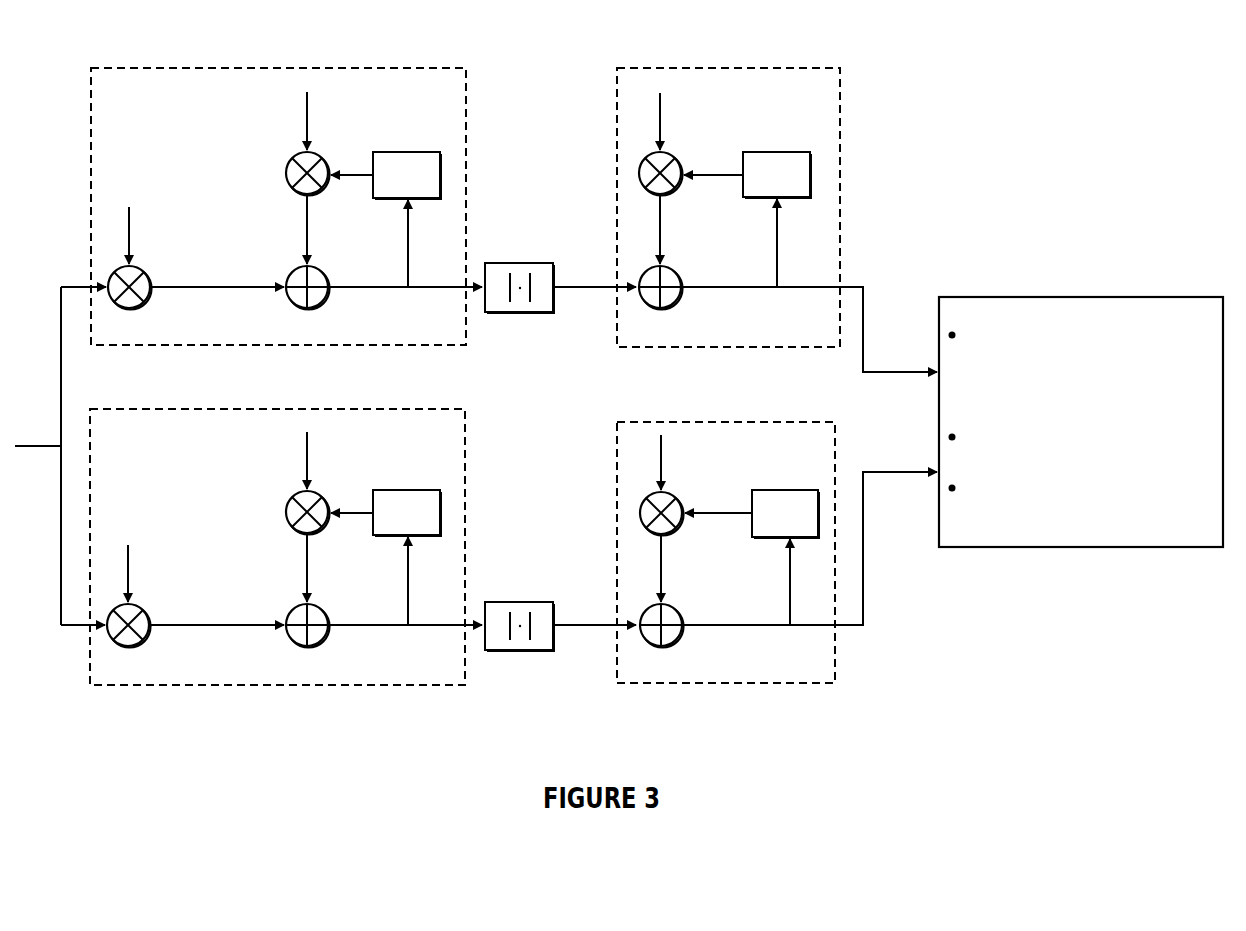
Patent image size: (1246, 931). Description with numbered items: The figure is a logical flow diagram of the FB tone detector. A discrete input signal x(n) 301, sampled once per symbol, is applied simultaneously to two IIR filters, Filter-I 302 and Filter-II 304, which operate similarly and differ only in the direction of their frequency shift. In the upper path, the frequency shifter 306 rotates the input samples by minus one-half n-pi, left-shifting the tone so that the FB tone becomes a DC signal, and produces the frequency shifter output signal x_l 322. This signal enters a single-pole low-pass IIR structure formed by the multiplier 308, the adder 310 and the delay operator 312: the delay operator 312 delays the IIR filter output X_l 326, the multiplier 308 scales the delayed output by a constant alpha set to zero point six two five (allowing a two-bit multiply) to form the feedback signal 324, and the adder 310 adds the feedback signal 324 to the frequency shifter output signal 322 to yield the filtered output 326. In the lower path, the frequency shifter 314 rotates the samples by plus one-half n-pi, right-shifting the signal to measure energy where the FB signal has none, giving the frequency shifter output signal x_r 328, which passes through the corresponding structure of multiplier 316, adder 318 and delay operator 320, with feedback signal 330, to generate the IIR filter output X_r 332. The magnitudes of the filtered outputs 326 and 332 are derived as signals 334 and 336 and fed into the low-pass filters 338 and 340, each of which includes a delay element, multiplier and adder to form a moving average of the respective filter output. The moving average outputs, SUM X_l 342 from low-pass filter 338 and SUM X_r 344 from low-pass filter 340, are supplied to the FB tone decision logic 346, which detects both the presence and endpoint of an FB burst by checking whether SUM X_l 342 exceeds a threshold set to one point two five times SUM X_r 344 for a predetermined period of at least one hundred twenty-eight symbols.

The input discrete signal x(n) 301 is at (48, 446).
The Filter-I 302 is at (119, 68).
The Filter-II 304 is at (460, 409).
The frequency shifter 306 is at (143, 278).
The multiplier 308 is at (290, 160).
The adder 310 is at (289, 302).
The delay operator 312 is at (401, 152).
The frequency shifter 314 is at (116, 640).
The multiplier 316 is at (285, 516).
The adder 318 is at (290, 641).
The delay operator 320 is at (415, 490).
The frequency shifter output signal x_l 322 is at (207, 289).
The feedback signal 324 is at (305, 221).
The IIR filter output X_l 326 is at (388, 289).
The frequency shifter output signal x_r 328 is at (200, 625).
The feedback signal 330 is at (302, 564).
The IIR filter output X_r 332 is at (411, 625).
The magnitude signal 334 is at (590, 286).
The magnitude signal 336 is at (585, 624).
The low-pass filter 338 is at (816, 68).
The low-pass filter 340 is at (789, 422).
The moving average output SUM X_l 342 is at (857, 284).
The moving average output SUM X_r 344 is at (864, 578).
The FB tone decision logic 346 is at (1175, 296).